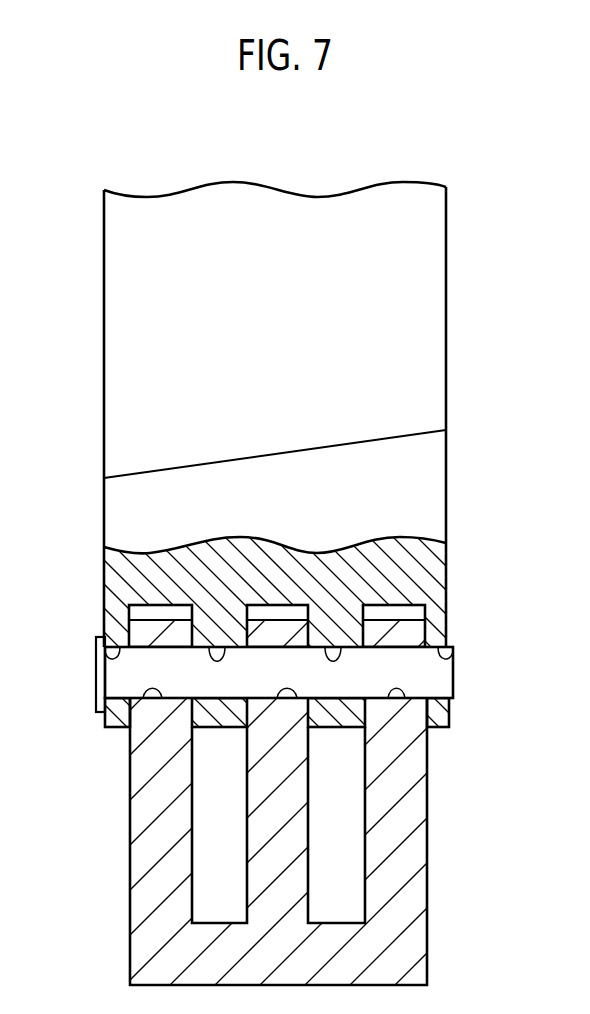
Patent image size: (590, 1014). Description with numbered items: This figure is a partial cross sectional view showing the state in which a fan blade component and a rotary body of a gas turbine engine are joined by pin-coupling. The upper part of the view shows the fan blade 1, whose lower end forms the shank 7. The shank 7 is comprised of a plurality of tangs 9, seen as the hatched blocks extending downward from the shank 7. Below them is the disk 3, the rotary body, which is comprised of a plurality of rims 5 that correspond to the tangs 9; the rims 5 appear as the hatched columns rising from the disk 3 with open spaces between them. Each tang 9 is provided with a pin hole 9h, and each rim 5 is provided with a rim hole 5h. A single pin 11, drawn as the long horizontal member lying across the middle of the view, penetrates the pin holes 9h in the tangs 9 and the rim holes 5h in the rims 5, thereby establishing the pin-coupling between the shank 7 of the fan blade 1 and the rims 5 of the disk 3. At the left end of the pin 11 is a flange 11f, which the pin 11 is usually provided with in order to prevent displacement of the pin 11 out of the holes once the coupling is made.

The fan blade 1 is at (448, 315).
The disk 3 is at (428, 938).
The rim 5 is at (130, 860).
The rim hole 5h is at (144, 698).
The shank 7 is at (448, 497).
The tang 9 is at (105, 722).
The pin hole 9h is at (210, 650).
The pin 11 is at (447, 677).
The flange 11f is at (97, 683).